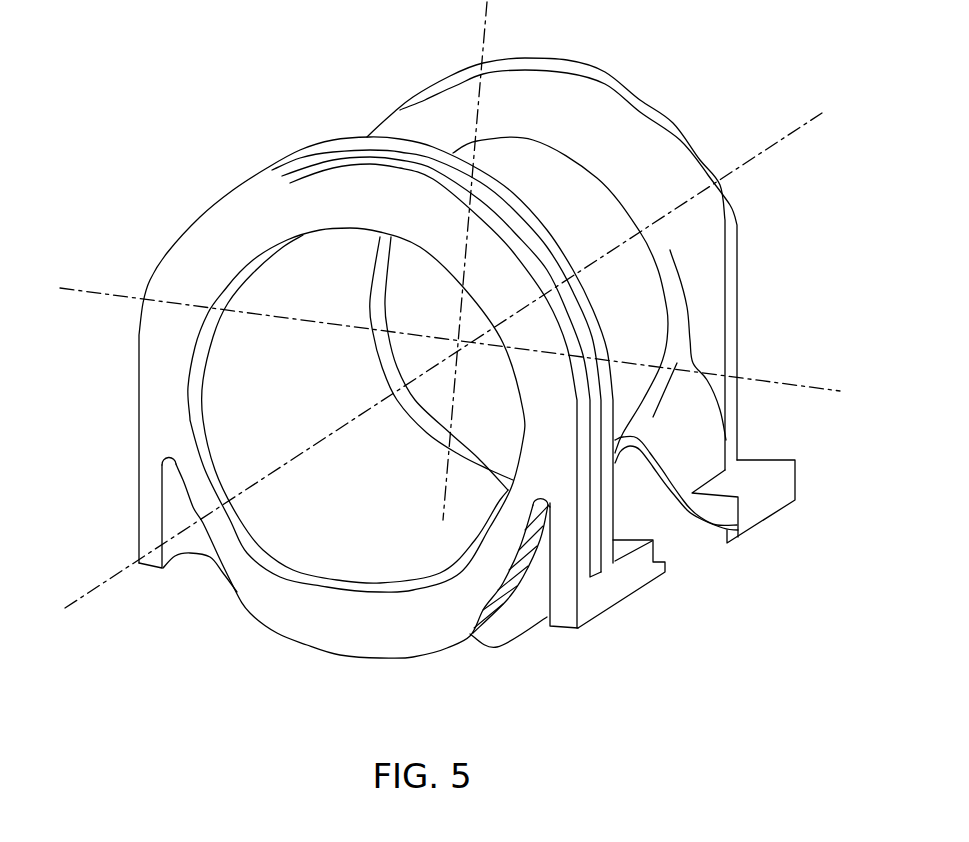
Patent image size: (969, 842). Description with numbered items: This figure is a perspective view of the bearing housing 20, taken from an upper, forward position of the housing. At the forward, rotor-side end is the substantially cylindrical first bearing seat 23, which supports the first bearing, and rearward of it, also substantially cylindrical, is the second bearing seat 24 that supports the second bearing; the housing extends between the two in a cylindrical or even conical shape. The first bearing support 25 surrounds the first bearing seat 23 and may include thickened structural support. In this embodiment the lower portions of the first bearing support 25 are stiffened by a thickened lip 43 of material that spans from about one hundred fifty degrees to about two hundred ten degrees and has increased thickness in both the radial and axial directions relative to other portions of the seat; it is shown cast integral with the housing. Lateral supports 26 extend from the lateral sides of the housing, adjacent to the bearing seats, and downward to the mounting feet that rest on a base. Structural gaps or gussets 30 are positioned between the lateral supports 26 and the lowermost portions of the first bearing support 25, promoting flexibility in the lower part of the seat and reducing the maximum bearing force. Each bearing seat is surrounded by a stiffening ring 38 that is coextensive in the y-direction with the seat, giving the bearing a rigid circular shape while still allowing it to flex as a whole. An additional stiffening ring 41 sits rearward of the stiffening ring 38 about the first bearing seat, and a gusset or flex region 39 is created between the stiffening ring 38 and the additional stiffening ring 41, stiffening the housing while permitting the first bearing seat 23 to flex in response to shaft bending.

The bearing housing 20 is at (312, 122).
The first bearing seat 23 is at (197, 258).
The second bearing seat 24 is at (380, 297).
The first bearing support 25 is at (173, 450).
The lateral supports 26 is at (570, 520).
The structural gaps or gussets 30 is at (170, 493).
The stiffening ring 38 is at (365, 178).
The gusset or flex region 39 is at (590, 391).
The additional stiffening ring 41 is at (398, 147).
The thickened lip 43 is at (350, 641).